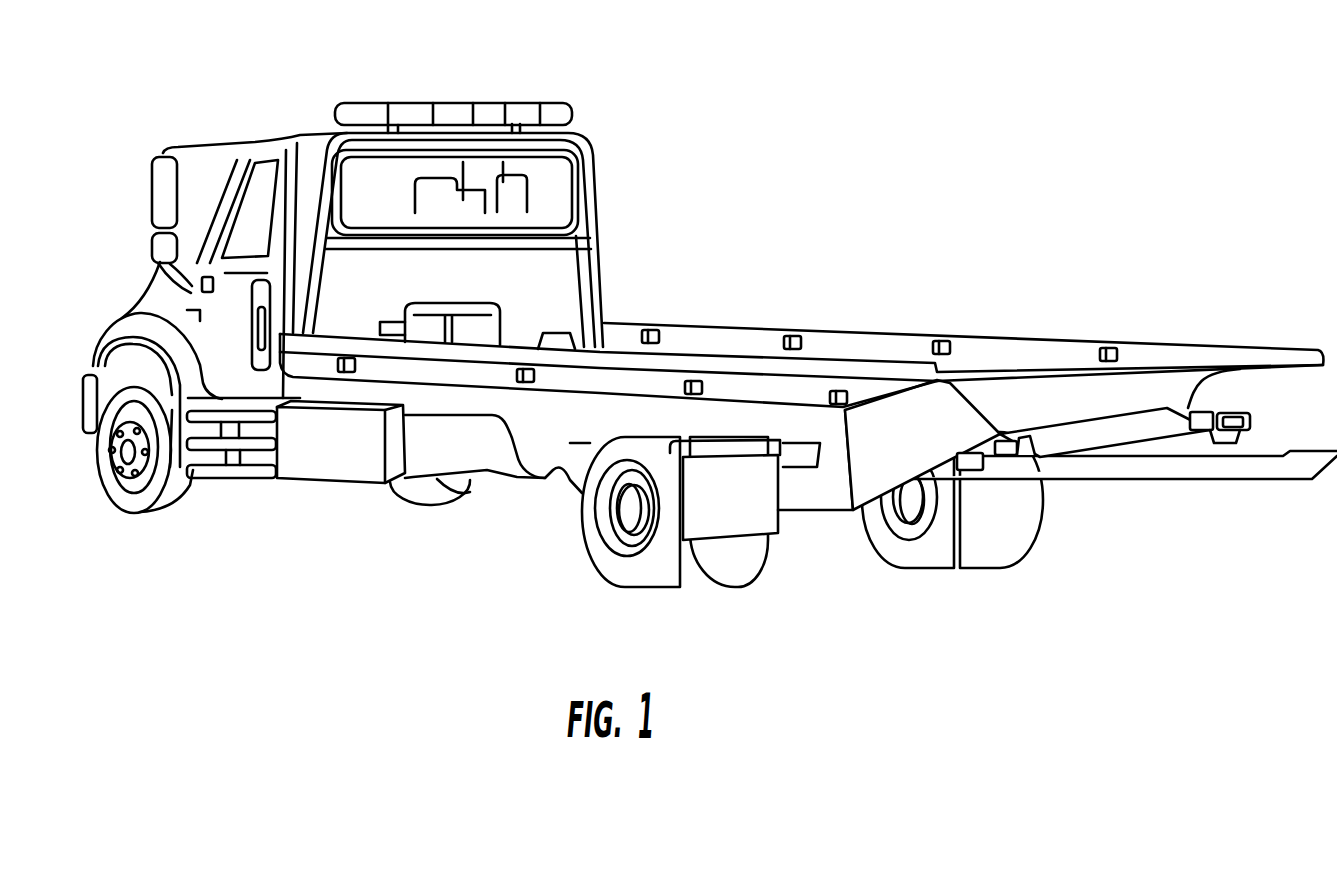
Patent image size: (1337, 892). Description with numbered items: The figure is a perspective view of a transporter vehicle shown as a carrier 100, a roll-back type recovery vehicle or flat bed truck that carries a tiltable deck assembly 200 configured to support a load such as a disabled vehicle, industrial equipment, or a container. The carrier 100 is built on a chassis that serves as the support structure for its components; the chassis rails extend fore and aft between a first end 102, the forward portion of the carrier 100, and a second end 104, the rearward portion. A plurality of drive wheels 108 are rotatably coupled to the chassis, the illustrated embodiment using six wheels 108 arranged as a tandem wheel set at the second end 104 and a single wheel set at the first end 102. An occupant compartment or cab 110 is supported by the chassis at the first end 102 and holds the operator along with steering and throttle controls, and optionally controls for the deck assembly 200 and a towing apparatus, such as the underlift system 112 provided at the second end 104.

The carrier 100 is at (676, 339).
The first end 102 is at (112, 322).
The second end 104 is at (883, 473).
The drive wheels 108 is at (167, 505).
The cab 110 is at (260, 213).
The underlift system 112 is at (1233, 480).
The deck assembly 200 is at (855, 308).